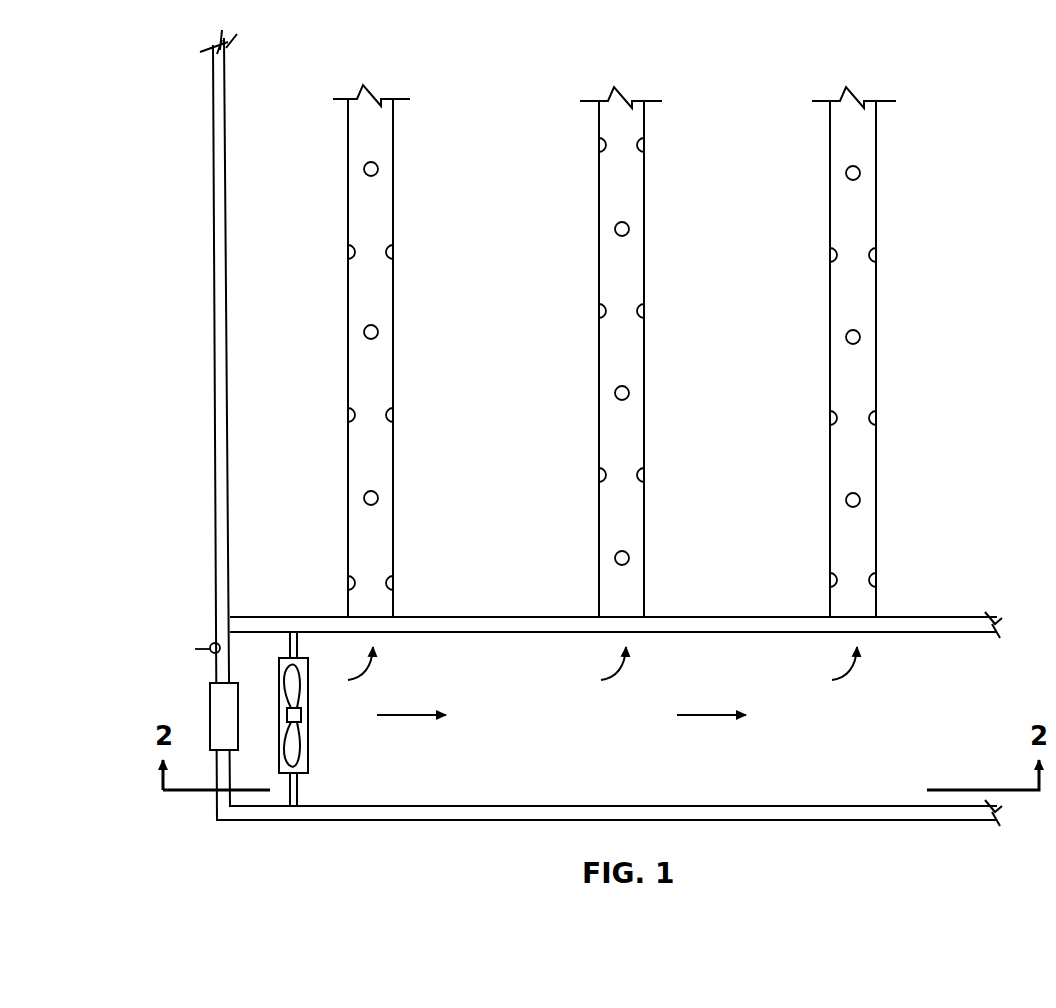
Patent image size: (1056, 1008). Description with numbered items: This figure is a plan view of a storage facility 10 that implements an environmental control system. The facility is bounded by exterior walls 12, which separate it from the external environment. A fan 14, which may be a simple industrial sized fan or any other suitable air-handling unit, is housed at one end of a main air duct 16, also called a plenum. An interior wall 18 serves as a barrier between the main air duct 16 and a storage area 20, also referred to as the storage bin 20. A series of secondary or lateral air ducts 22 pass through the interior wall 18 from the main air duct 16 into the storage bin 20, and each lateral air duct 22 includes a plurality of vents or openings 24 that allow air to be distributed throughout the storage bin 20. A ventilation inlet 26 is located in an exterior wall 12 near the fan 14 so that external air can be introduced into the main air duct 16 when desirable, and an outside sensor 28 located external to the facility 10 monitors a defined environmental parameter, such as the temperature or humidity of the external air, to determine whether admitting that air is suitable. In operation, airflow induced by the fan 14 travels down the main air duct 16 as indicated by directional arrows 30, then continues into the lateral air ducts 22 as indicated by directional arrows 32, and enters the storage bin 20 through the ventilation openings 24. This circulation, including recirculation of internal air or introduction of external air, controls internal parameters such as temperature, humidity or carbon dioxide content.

The storage facility 10 is at (944, 192).
The exterior walls 12 is at (230, 485).
The fan 14 is at (308, 733).
The main air duct 16 is at (544, 721).
The interior wall 18 is at (782, 633).
The storage area 20 is at (718, 313).
The lateral air ducts 22 is at (393, 200).
The openings 24 is at (377, 328).
The ventilation inlet 26 is at (210, 716).
The outside sensor 28 is at (210, 644).
The directional arrows 30 is at (418, 716).
The directional arrows 32 is at (385, 672).